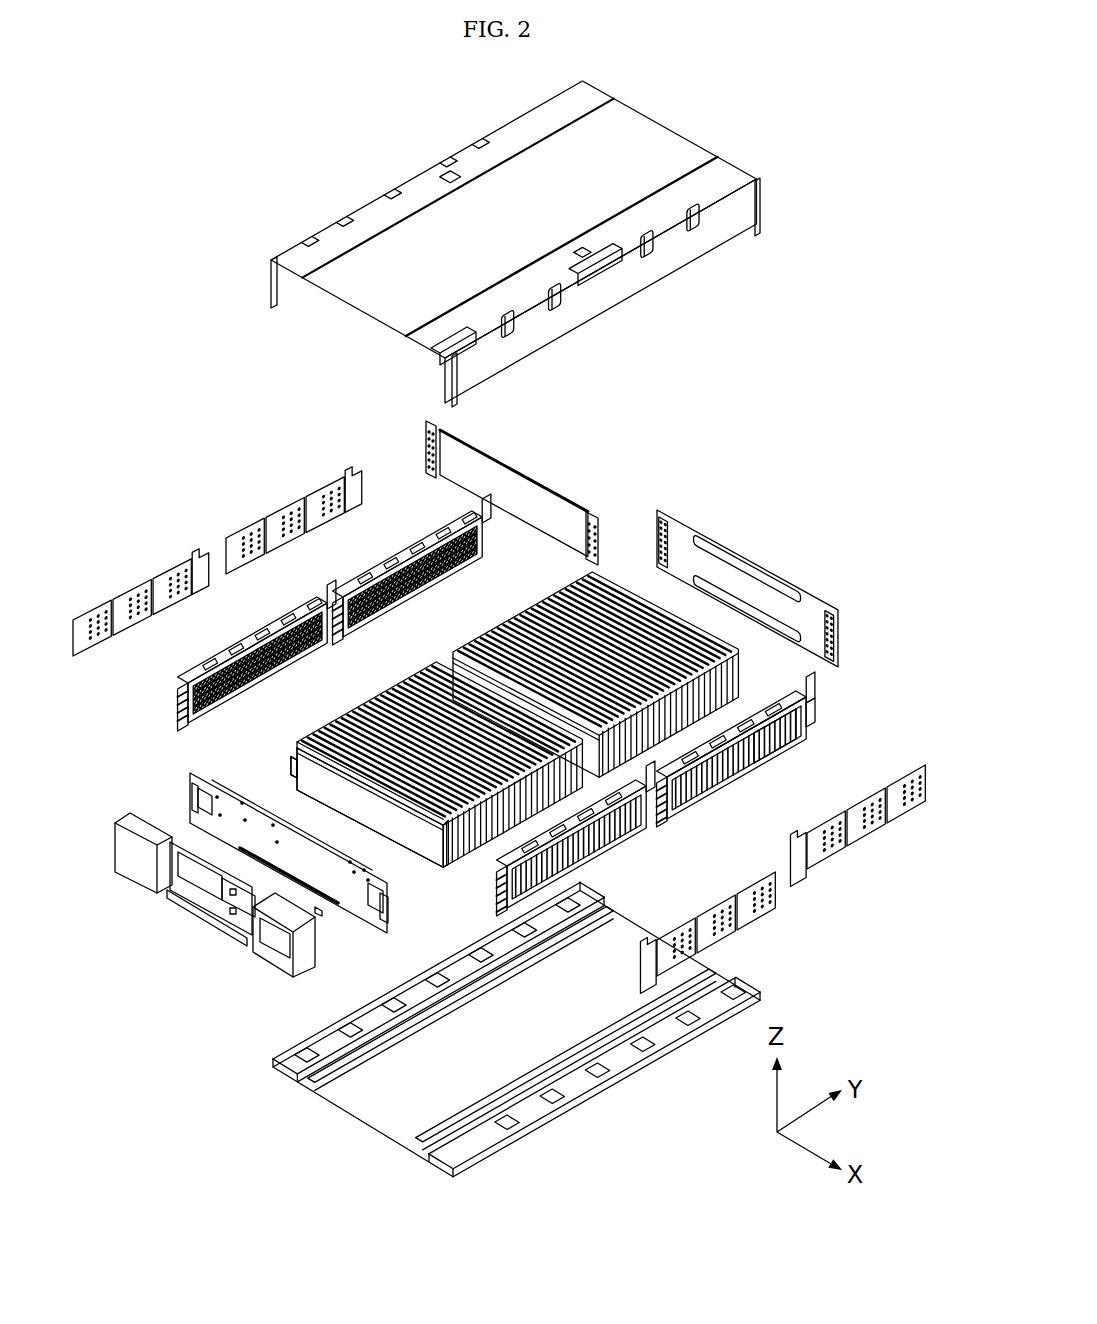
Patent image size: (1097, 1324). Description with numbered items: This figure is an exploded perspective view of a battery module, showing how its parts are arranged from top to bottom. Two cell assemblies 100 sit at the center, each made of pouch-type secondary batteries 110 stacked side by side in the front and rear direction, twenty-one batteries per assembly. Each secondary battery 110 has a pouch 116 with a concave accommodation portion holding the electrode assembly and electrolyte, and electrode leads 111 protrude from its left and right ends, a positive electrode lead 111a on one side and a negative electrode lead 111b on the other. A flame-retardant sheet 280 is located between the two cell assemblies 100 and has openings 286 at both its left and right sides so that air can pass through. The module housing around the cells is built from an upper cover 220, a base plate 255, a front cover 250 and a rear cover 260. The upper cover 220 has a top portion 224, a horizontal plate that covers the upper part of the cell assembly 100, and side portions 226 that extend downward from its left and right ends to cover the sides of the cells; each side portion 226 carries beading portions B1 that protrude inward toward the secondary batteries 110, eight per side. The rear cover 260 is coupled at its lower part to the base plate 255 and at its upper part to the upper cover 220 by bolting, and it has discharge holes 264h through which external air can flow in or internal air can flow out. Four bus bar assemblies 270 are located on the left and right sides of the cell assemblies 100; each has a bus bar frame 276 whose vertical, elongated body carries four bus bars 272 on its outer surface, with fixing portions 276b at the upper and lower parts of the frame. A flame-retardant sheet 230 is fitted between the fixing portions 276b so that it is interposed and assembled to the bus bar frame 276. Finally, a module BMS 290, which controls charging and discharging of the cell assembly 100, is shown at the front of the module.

The cell assembly 100 is at (482, 878).
The secondary battery 110 is at (358, 800).
The end plates 111 is at (586, 1170).
The positive electrode lead 111a is at (291, 762).
The negative electrode lead 111b is at (442, 870).
The pouch 116 is at (302, 739).
The upper cover 220 is at (522, 244).
The top portion 224 is at (542, 181).
The side portion 226 is at (404, 187).
The beading portion B1 is at (700, 220).
The flame-retardant sheet 230 is at (192, 546).
The front cover 250 is at (180, 791).
The base plate 255 is at (372, 986).
The rear cover 260 is at (738, 590).
The discharge hole 264h is at (658, 564).
The bus bar assembly 270 is at (528, 703).
The bus bar 272 is at (800, 802).
The bus bar frame 276 is at (780, 770).
The fixing portion 276b is at (806, 738).
The flame-retardant sheet 280 is at (498, 491).
The opening 286 is at (426, 443).
The module BMS 290 is at (192, 926).